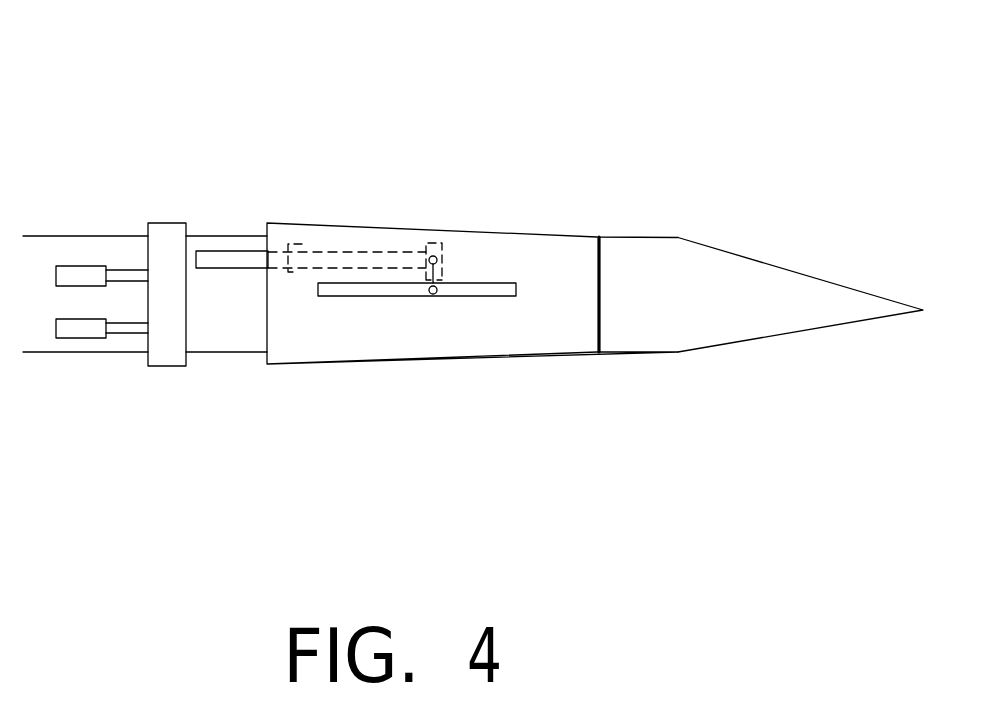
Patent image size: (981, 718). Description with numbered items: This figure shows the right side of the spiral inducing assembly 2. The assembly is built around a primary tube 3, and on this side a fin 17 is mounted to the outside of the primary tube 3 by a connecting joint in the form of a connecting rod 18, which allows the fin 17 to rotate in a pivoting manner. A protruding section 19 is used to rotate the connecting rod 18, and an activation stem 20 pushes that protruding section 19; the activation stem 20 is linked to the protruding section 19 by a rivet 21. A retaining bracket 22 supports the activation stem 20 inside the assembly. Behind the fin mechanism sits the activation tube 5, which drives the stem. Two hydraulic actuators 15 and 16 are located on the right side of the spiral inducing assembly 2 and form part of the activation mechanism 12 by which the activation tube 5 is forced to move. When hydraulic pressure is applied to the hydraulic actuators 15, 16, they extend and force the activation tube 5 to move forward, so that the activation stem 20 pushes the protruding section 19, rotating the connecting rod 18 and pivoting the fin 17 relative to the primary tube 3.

The spiral inducing assembly 2 is at (395, 382).
The primary tube 3 is at (547, 335).
The activation tube 5 is at (172, 232).
The activation mechanism 12 is at (116, 342).
The hydraulic actuator 15 is at (87, 278).
The hydraulic actuator 16 is at (77, 328).
The fin 17 is at (497, 288).
The connecting rod 18 is at (430, 287).
The protruding section 19 is at (438, 272).
The activation stem 20 is at (239, 255).
The rivet 21 is at (432, 255).
The retaining bracket 22 is at (311, 247).